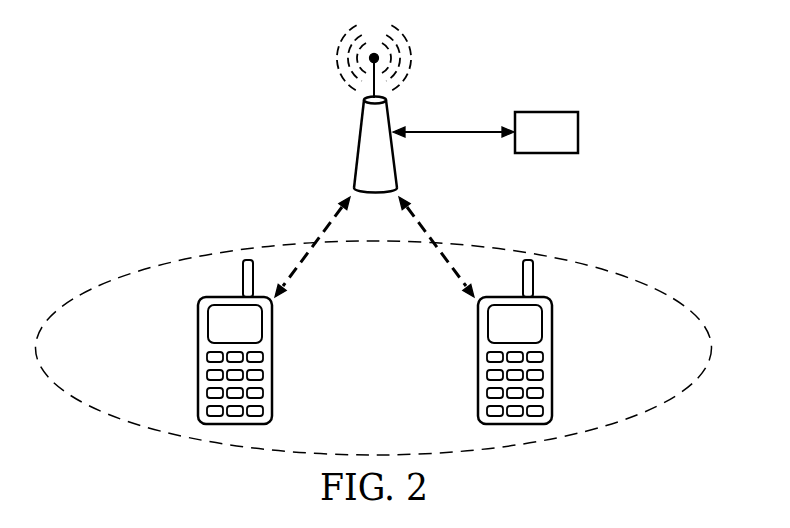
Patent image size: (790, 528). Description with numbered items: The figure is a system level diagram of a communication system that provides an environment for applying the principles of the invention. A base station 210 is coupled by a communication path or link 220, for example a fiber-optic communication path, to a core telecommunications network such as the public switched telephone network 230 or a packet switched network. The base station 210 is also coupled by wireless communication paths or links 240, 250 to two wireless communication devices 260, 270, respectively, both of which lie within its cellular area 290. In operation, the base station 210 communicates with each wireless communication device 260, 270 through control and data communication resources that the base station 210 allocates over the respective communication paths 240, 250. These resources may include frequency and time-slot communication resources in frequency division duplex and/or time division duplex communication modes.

The base station 210 is at (358, 143).
The communication path or link 220 is at (449, 129).
The public switched telephone network 230 is at (578, 127).
The wireless communication path or link 240 is at (329, 216).
The wireless communication path or link 250 is at (420, 217).
The wireless communication device 260 is at (198, 360).
The wireless communication device 270 is at (553, 359).
The cellular area 290 is at (395, 363).